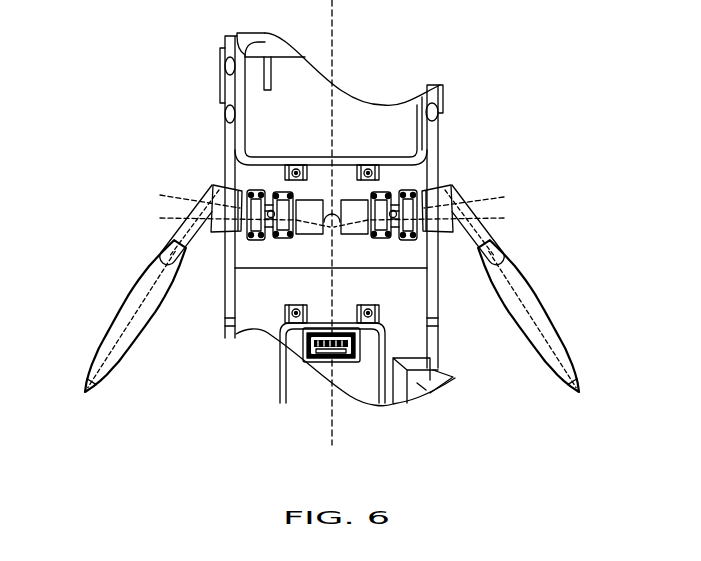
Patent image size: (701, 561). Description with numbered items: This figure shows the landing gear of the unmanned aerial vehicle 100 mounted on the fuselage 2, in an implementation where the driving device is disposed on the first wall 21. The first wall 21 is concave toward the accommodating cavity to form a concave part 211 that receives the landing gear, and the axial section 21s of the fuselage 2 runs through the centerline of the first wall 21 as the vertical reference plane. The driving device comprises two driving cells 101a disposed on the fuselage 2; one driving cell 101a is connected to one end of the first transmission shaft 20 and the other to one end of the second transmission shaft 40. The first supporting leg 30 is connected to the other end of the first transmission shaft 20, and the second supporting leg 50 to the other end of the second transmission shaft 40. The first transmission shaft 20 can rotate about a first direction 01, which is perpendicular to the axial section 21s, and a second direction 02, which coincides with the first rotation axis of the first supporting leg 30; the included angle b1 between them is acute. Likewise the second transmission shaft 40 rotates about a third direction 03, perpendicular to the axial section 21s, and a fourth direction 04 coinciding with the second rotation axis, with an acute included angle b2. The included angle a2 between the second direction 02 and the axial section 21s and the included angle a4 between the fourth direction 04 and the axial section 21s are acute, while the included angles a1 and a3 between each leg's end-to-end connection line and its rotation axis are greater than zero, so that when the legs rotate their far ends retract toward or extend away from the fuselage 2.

The unmanned aerial vehicle 100 is at (133, 38).
The fuselage 2 is at (445, 88).
The first wall 21 is at (402, 128).
The axial section 21s is at (335, 35).
The concave part 211 is at (243, 172).
The first transmission shaft 20 is at (244, 238).
The second transmission shaft 40 is at (420, 238).
The first supporting leg 30 is at (102, 343).
The second supporting leg 50 is at (547, 337).
The driving cell 101a is at (340, 230).
The included angle a1 is at (190, 206).
The included angle a2 is at (327, 212).
The included angle a3 is at (470, 206).
The included angle a4 is at (336, 212).
The included angle b1 is at (229, 211).
The included angle b2 is at (435, 211).
The first direction 01 is at (233, 221).
The second direction 02 is at (188, 194).
The third direction 03 is at (432, 221).
The fourth direction 04 is at (473, 194).